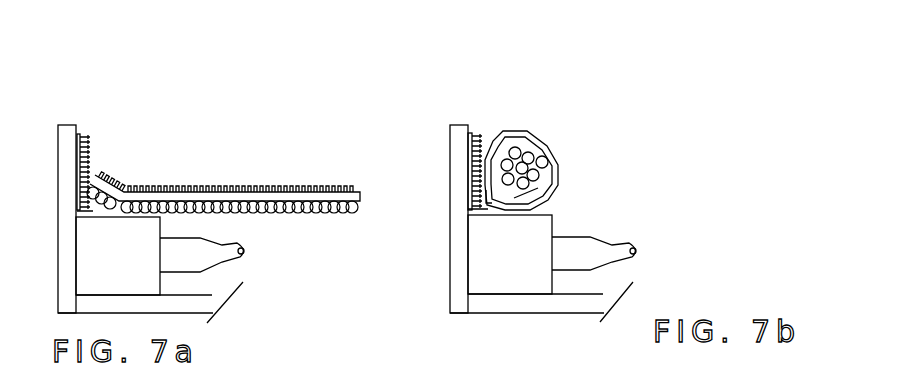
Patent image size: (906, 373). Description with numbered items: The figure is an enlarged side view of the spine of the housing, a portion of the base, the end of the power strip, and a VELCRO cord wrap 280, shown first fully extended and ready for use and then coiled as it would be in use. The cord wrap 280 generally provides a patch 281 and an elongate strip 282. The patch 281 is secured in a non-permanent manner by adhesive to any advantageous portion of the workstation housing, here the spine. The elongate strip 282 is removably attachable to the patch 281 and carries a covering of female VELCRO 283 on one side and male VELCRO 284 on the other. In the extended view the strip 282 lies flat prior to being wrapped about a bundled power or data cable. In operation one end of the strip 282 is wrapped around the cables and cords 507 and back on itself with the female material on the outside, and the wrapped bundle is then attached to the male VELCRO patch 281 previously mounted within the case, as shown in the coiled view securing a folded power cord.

In FIG. 7a, the VELCRO cord wrap 280 is at (183, 132).
In FIG. 7b, the VELCRO cord wrap 280 is at (568, 173).
In FIG. 7a, the patch 281 is at (102, 135).
In FIG. 7b, the patch 281 is at (482, 130).
In FIG. 7a, the elongate strip 282 is at (255, 150).
In FIG. 7b, the elongate strip 282 is at (543, 108).
In FIG. 7a, the female VELCRO 283 is at (290, 222).
In FIG. 7b, the female VELCRO 283 is at (557, 193).
In FIG. 7a, the male VELCRO 284 is at (303, 180).
In FIG. 7b, the male VELCRO 284 is at (528, 133).
In FIG. 7a, the cables and cords 507 is at (319, 353).
In FIG. 7b, the cables and cords 507 is at (530, 158).